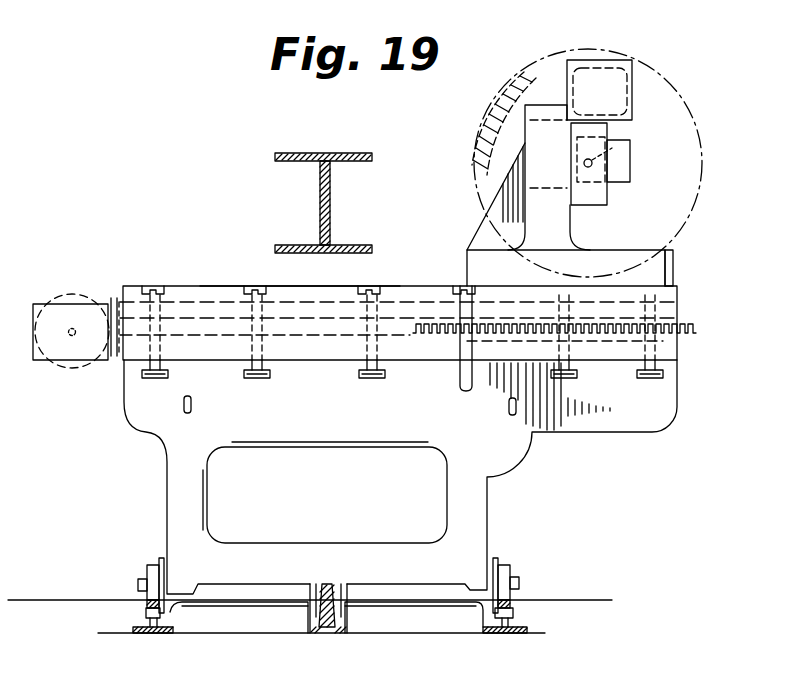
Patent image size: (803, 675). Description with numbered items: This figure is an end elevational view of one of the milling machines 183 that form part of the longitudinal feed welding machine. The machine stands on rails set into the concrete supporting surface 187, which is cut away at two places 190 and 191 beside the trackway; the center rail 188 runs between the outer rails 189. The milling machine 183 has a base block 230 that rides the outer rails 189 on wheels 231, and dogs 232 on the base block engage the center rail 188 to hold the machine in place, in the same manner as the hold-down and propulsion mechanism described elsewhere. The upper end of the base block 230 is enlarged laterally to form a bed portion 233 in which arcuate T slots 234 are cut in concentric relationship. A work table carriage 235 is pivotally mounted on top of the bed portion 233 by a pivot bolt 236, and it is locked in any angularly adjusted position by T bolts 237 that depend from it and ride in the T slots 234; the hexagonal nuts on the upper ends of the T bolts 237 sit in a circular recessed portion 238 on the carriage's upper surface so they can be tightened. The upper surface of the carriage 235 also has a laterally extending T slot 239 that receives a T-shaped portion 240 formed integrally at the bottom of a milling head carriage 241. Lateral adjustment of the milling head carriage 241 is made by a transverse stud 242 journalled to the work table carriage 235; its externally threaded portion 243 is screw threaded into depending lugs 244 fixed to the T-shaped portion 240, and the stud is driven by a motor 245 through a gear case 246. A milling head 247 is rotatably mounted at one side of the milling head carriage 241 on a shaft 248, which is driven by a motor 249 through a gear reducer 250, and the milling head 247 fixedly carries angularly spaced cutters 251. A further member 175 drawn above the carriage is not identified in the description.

The I-beam rail 175 is at (333, 200).
The milling machine 183 is at (348, 173).
The concrete supporting surface 187 is at (573, 602).
The center rail 188 is at (310, 610).
The outer rails 189 is at (143, 611).
The cut away portion 190 is at (483, 603).
The cut away portion 191 is at (352, 612).
The base block 230 is at (475, 502).
The wheels 231 is at (153, 567).
The dogs 232 is at (340, 583).
The bed portion 233 is at (570, 423).
The arcuate T slots 234 is at (167, 373).
The work table carriage 235 is at (293, 294).
The pivot bolt 236 is at (480, 380).
The T bolts 237 is at (253, 380).
The circular recessed portion 238 is at (137, 290).
The laterally extending T slot 239 is at (643, 300).
The T-shaped portion 240 is at (648, 318).
The milling head carriage 241 is at (537, 207).
The transverse stud 242 is at (307, 333).
The externally threaded portion 243 is at (573, 338).
The depending lugs 244 is at (518, 281).
The motor 245 is at (80, 292).
The gear case 246 is at (52, 344).
The milling head 247 is at (675, 148).
The shaft 248 is at (632, 135).
The motor 249 is at (613, 72).
The gear reducer 250 is at (633, 173).
The angularly spaced cutters 251 is at (513, 60).